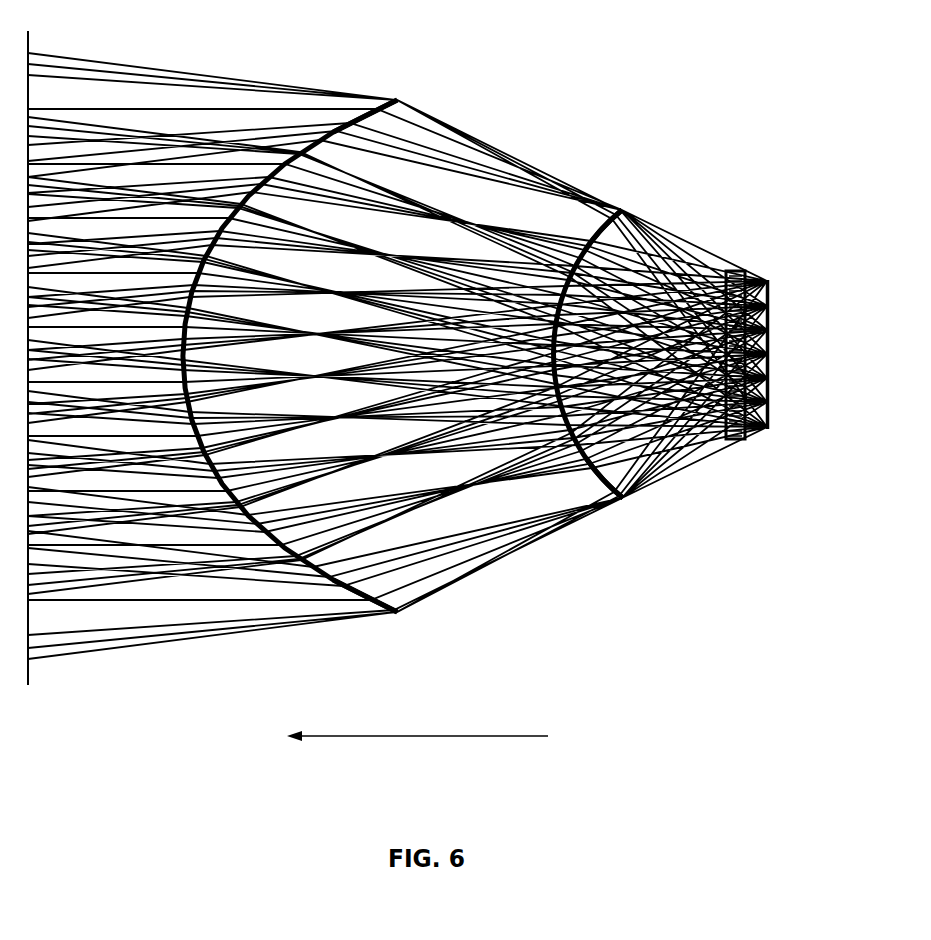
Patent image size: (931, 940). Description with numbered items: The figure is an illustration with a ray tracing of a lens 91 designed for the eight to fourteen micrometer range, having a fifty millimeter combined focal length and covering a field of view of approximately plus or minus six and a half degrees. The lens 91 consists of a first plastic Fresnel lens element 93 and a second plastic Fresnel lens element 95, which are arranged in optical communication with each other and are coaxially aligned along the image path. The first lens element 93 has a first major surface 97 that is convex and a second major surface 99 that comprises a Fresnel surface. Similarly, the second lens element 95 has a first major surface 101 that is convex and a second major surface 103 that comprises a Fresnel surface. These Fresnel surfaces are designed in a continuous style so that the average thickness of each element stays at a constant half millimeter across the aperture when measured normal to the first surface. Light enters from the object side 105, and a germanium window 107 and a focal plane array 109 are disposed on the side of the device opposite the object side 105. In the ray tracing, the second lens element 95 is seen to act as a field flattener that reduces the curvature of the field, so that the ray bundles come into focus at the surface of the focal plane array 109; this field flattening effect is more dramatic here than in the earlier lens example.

The lens 91 is at (587, 52).
The first plastic Fresnel lens element 93 is at (397, 100).
The second plastic Fresnel lens element 95 is at (622, 212).
The first major surface of the first lens element 97 is at (327, 137).
The second major surface of the first lens element 99 is at (392, 594).
The first major surface of the second lens element 101 is at (577, 205).
The second major surface of the second lens element 103 is at (636, 480).
The object side 105 is at (263, 788).
The germanium window 107 is at (738, 272).
The focal plane array 109 is at (768, 378).